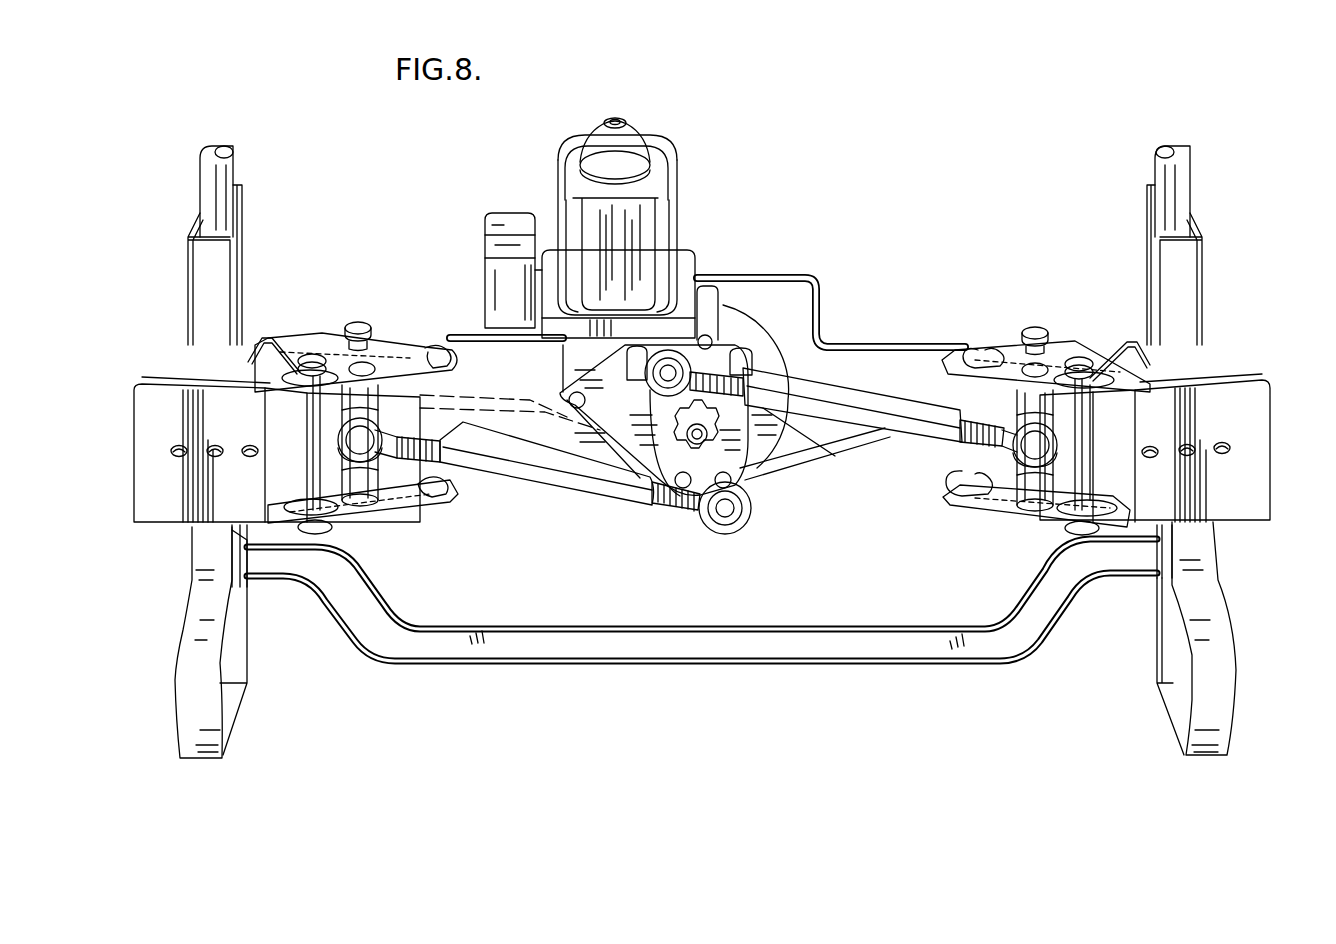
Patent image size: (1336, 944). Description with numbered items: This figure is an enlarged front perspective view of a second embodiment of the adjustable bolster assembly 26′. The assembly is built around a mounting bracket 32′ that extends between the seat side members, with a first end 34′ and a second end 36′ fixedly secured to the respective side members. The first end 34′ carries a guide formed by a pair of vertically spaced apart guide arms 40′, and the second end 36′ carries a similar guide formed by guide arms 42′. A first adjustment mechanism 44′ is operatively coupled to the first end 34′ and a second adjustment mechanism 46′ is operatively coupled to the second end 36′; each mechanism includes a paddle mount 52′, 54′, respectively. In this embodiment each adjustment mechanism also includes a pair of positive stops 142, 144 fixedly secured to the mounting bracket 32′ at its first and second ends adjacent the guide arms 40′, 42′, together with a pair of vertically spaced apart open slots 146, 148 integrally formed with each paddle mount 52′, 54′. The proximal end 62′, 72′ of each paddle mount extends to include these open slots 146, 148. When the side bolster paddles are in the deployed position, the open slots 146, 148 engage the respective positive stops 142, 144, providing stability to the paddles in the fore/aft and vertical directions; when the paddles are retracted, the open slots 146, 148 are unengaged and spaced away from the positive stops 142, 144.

The adjustable bolster assembly 26′ is at (860, 337).
The mounting bracket 32′ is at (800, 475).
The first end 34′ is at (1067, 340).
The second end 36′ is at (328, 336).
The guide arms 40′ is at (1110, 340).
The guide arms 42′ is at (302, 338).
The first adjustment mechanism 44′ is at (932, 513).
The second adjustment mechanism 46′ is at (470, 510).
The paddle mount 52′ is at (1015, 507).
The paddle mount 54′ is at (360, 520).
The proximal end 62′ is at (972, 512).
The proximal end 72′ is at (403, 510).
The positive stop 142 is at (1035, 330).
The positive stop 144 is at (357, 325).
The open slot 146 is at (978, 357).
The open slot 148 is at (425, 345).